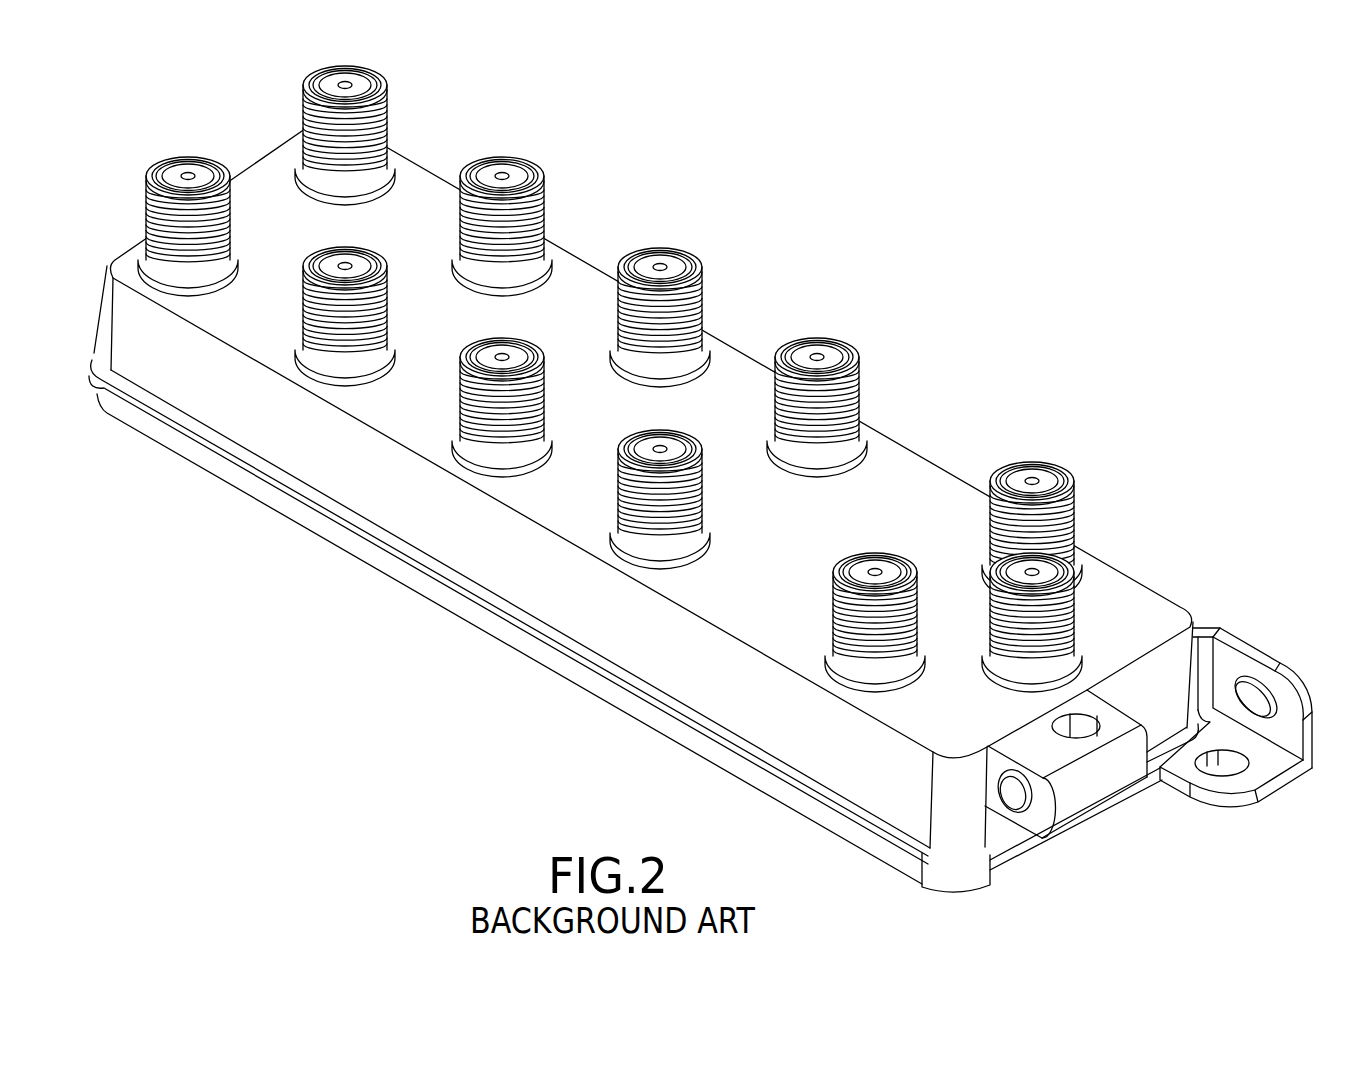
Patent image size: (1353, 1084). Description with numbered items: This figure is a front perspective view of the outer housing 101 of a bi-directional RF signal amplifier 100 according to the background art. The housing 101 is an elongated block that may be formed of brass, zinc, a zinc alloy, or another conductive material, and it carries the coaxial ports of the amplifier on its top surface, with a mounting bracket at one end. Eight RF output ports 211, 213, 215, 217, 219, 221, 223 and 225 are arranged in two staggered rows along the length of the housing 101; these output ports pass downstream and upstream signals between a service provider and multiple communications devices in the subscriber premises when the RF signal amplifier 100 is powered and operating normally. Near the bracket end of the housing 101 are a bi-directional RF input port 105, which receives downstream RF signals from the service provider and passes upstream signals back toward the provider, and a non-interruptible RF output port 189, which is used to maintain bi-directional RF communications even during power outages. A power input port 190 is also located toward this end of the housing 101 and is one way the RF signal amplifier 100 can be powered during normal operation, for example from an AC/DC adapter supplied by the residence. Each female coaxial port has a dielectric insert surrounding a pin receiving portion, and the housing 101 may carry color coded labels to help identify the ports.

The bi-directional RF signal amplifier 100 is at (1022, 382).
The housing 101 is at (546, 577).
The bi-directional RF input port 105 is at (1077, 613).
The non-interruptible RF output port 189 is at (1061, 477).
The power input port 190 is at (832, 612).
The RF output port 211 is at (704, 503).
The RF output port 213 is at (547, 387).
The RF output port 215 is at (389, 306).
The RF output port 217 is at (232, 208).
The RF output port 219 is at (848, 357).
The RF output port 221 is at (702, 292).
The RF output port 223 is at (547, 197).
The RF output port 225 is at (389, 123).